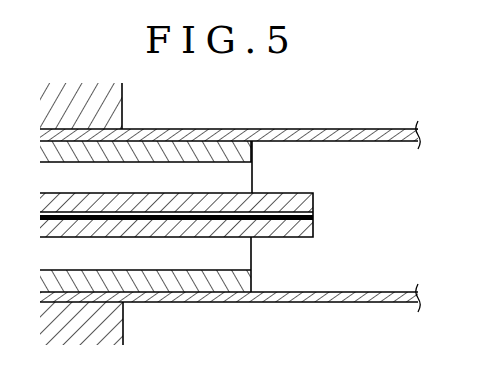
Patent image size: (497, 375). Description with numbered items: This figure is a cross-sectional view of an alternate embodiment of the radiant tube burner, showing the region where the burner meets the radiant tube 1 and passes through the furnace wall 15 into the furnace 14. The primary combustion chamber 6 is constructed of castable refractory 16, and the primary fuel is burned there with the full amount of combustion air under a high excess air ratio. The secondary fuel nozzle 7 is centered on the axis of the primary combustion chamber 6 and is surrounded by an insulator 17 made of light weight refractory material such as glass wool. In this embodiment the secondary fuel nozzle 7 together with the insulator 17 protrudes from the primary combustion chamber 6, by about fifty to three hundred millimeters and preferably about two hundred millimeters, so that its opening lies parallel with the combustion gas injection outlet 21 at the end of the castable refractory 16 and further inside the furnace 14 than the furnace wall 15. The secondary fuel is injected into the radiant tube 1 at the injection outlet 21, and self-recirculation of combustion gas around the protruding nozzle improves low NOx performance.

The radiant tube 1 is at (345, 129).
The primary combustion chamber 6 is at (111, 184).
The secondary fuel nozzle 7 is at (197, 224).
The furnace 14 is at (270, 115).
The furnace wall 15 is at (114, 101).
The castable refractory 16 is at (201, 152).
The refractory insulator 17 is at (289, 238).
The combustion gas injection outlet 21 is at (253, 178).